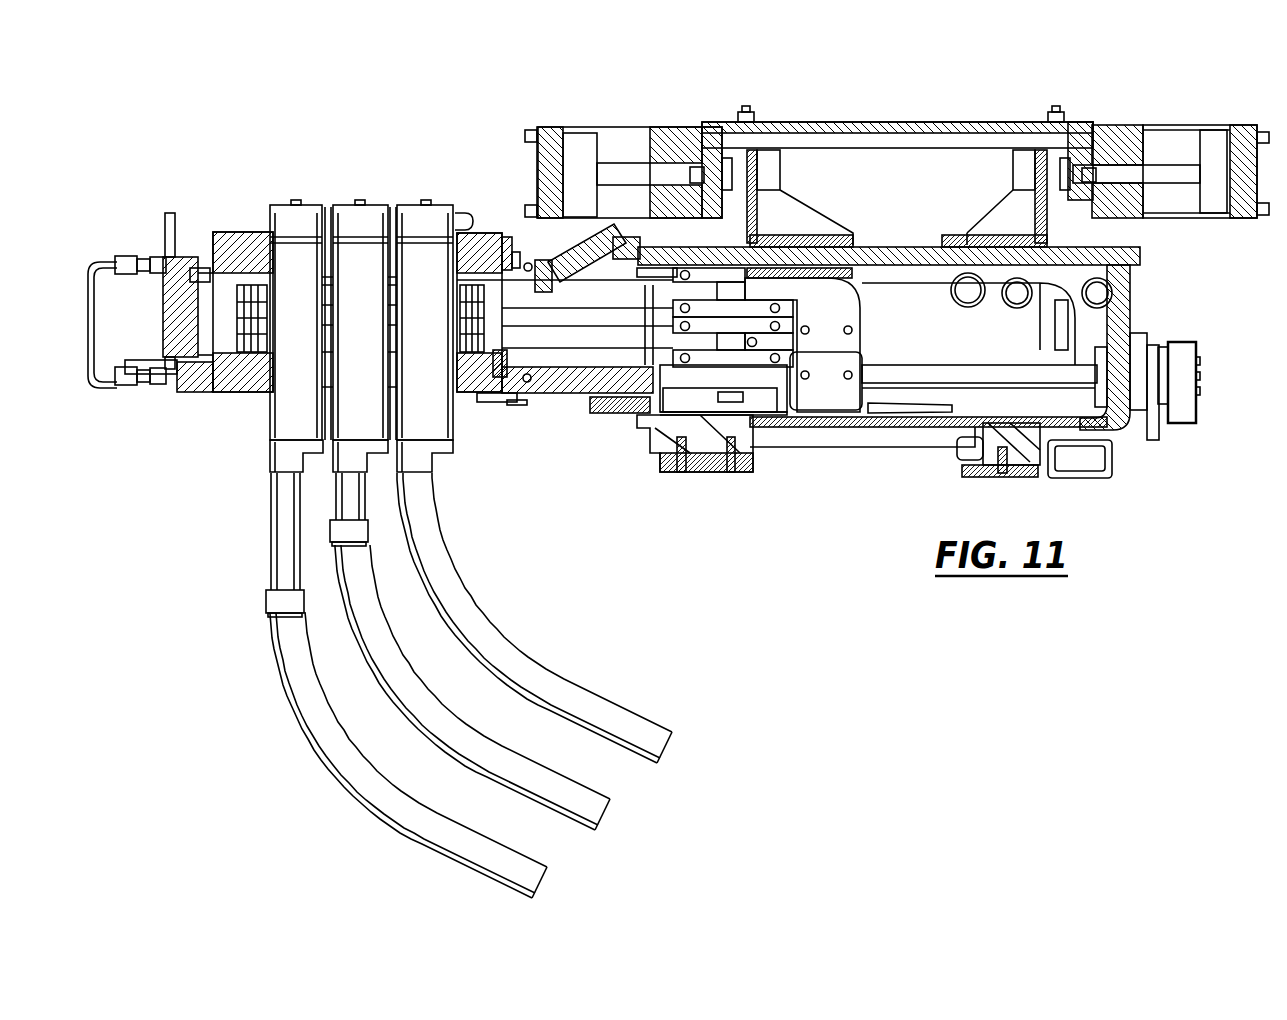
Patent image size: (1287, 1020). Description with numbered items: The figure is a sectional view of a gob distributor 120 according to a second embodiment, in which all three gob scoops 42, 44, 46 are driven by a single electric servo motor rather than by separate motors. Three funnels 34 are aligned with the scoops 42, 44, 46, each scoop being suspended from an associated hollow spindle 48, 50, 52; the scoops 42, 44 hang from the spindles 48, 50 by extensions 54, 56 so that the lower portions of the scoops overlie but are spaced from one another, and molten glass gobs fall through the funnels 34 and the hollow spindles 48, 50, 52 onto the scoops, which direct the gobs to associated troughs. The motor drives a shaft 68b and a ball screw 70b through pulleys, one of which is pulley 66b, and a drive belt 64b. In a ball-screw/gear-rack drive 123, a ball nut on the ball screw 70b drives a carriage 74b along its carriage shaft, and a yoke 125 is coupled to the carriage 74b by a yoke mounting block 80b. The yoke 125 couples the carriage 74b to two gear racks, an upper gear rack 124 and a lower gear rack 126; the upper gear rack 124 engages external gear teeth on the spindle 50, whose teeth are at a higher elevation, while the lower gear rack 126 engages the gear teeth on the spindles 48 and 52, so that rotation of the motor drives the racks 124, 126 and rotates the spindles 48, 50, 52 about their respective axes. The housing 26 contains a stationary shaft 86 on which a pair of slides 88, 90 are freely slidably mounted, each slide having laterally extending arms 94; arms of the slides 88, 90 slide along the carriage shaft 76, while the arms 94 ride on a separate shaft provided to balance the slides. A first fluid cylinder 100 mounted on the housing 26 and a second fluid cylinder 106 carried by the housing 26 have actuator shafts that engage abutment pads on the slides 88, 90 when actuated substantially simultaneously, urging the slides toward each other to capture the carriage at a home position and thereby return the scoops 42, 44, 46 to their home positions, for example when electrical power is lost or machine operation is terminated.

The gob distributor 120 is at (532, 69).
The first fluid cylinder 100 is at (603, 127).
The slide 88 is at (800, 161).
The housing 26 is at (950, 119).
The slide 90 is at (1008, 150).
The second fluid cylinder 106 is at (1168, 130).
The shaft 86 is at (893, 246).
The arm 94 is at (1067, 343).
The upper gear rack 124 is at (587, 297).
The carriage 74b is at (872, 352).
The ball screw 70b is at (982, 375).
The drive belt 64b is at (1178, 352).
The pulley 66b is at (1193, 415).
The shaft 68b is at (1100, 428).
The carriage shaft 76 is at (1024, 403).
The yoke mounting block 80b is at (832, 397).
The ball-screw/gear-rack drive 123 is at (873, 422).
The yoke 125 is at (727, 353).
The lower gear rack 126 is at (587, 330).
The funnel 34 is at (417, 220).
The hollow spindle 52 is at (447, 410).
The hollow spindle 50 is at (392, 420).
The hollow spindle 48 is at (270, 417).
The extension 56 is at (338, 497).
The extension 54 is at (268, 562).
The gob scoop 46 is at (470, 590).
The gob scoop 44 is at (378, 683).
The gob scoop 42 is at (370, 813).